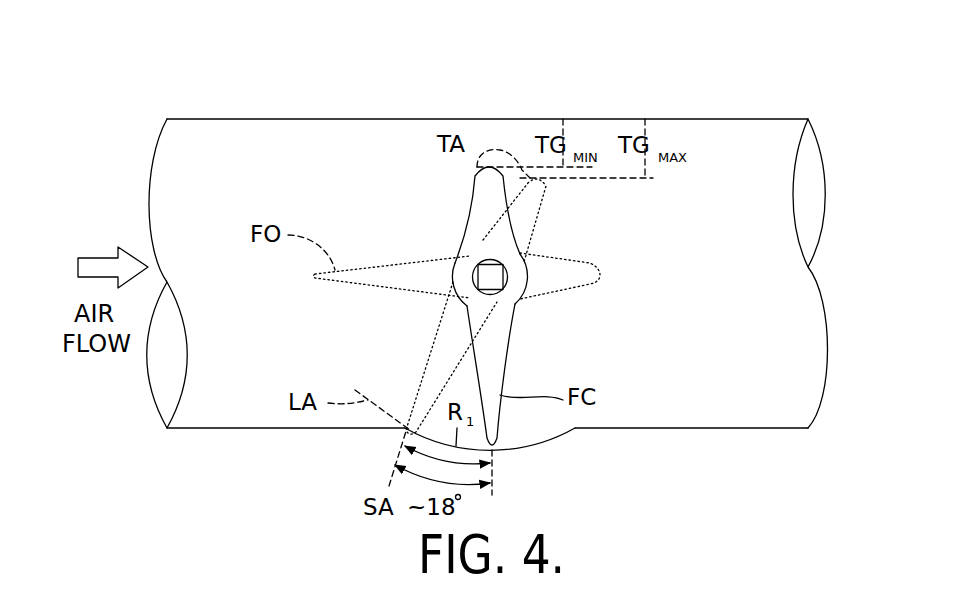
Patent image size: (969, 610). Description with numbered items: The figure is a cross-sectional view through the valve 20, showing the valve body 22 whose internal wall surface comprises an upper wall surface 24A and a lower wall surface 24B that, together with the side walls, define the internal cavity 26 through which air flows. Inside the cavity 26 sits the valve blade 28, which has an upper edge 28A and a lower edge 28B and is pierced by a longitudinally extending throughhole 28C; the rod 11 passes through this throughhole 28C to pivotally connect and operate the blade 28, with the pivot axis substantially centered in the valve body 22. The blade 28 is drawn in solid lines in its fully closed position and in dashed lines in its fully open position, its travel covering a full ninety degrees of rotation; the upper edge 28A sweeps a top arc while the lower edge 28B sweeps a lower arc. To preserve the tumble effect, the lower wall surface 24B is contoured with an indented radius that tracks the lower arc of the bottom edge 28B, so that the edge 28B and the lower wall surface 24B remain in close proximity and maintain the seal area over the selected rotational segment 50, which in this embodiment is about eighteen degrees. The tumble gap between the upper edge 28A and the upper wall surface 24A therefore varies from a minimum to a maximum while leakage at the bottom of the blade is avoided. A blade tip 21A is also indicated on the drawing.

The valve 20 is at (596, 70).
The valve body 22 is at (268, 119).
The upper wall surface 24A is at (468, 119).
The lower wall surface 24B is at (356, 428).
The internal cavity 26 is at (347, 143).
The valve blade 28 is at (391, 306).
The upper edge 28A is at (485, 168).
The lower edge 28B is at (315, 276).
The throughhole 28C is at (458, 266).
The rod 11 is at (478, 262).
The blade tip 21A is at (598, 275).
The selected rotational segment 50 is at (492, 452).